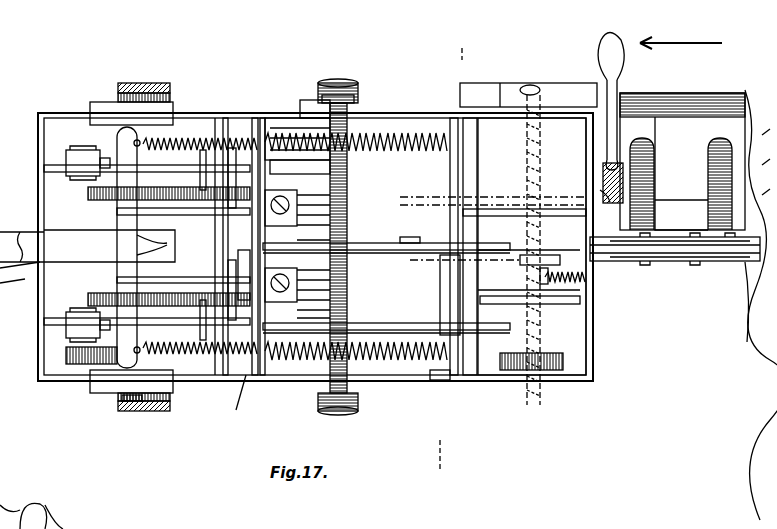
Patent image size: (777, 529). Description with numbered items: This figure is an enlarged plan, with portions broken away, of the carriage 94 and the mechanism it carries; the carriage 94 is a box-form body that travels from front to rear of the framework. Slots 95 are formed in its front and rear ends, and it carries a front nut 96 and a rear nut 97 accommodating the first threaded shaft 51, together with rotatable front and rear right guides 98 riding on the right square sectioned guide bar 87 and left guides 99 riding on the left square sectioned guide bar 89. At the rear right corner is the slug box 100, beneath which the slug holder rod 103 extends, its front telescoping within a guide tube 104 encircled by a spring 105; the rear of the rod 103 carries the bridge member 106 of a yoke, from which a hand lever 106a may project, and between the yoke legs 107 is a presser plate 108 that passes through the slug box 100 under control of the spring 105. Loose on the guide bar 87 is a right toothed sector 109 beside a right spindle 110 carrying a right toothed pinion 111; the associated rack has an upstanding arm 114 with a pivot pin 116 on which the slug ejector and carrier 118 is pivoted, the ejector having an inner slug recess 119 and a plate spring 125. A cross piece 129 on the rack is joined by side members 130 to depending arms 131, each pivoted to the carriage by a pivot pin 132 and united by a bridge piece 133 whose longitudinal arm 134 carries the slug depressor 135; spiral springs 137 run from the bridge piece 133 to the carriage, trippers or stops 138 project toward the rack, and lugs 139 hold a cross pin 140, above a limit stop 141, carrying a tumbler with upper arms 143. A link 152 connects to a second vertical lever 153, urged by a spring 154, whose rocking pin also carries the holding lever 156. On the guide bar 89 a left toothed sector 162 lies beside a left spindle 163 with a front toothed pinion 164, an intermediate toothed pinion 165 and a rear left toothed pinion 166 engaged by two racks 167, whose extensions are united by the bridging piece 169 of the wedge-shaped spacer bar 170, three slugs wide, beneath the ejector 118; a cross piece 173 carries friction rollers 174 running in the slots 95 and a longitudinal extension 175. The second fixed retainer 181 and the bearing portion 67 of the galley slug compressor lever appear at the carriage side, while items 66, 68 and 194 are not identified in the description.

The first threaded shaft 51 is at (336, 83).
The handle 66 is at (608, 52).
The bearing portion 67 is at (681, 211).
The housing 68 is at (690, 130).
The right square sectioned guide bar 87 is at (460, 400).
The left square sectioned guide bar 89 is at (128, 402).
The carriage 94 is at (345, 118).
The slot 95 is at (345, 85).
The front nut 96 is at (262, 380).
The rear nut 97 is at (290, 128).
The right guides 98 is at (452, 118).
The left guides 99 is at (105, 106).
The slug box 100 is at (478, 170).
The rod 103 is at (570, 98).
The guide tube 104 is at (540, 320).
The spring 105 is at (528, 130).
The bridge member 106 is at (590, 96).
The hand lever 106a is at (530, 85).
The legs 107 is at (468, 130).
The presser plate 108 is at (470, 212).
The right toothed sector 109 is at (563, 362).
The right spindle 110 is at (453, 130).
The right toothed pinion 111 is at (420, 381).
The arm 114 is at (45, 247).
The pivot pin 116 is at (242, 275).
The slug ejector and carrier 118 is at (355, 252).
The inner slug recess 119 is at (352, 205).
The plate spring 125 is at (407, 255).
The cross piece 129 is at (460, 295).
The side member 130 is at (165, 137).
The depending arm 131 is at (100, 172).
The pivot pin 132 is at (77, 152).
The bridge piece 133 is at (90, 166).
The longitudinal arm 134 is at (160, 242).
The slug depressor 135 is at (690, 265).
The spiral spring 137 is at (303, 136).
The trippers or stops 138 is at (565, 313).
The lugs 139 is at (195, 140).
The cross pin 140 is at (185, 212).
The limit stop 141 is at (197, 279).
The upper arms 143 is at (148, 137).
The link 152 is at (420, 245).
The second vertical lever 153 is at (548, 278).
The spring 154 is at (555, 268).
The holding lever 156 is at (565, 300).
The left toothed sector 162 is at (92, 370).
The left spindle 163 is at (160, 404).
The front toothed pinion 164 is at (203, 342).
The intermediate toothed pinion 165 is at (140, 412).
The rear left toothed pinion 166 is at (178, 110).
The racks 167 is at (87, 193).
The bridging piece 169 is at (215, 375).
The wedged shaped spacer bar 170 is at (335, 280).
The cross piece 173 is at (248, 150).
The friction roller 174 is at (240, 150).
The longitudinal extension 175 is at (300, 200).
The second fixed retainer 181 is at (742, 258).
The lever 194 is at (45, 335).